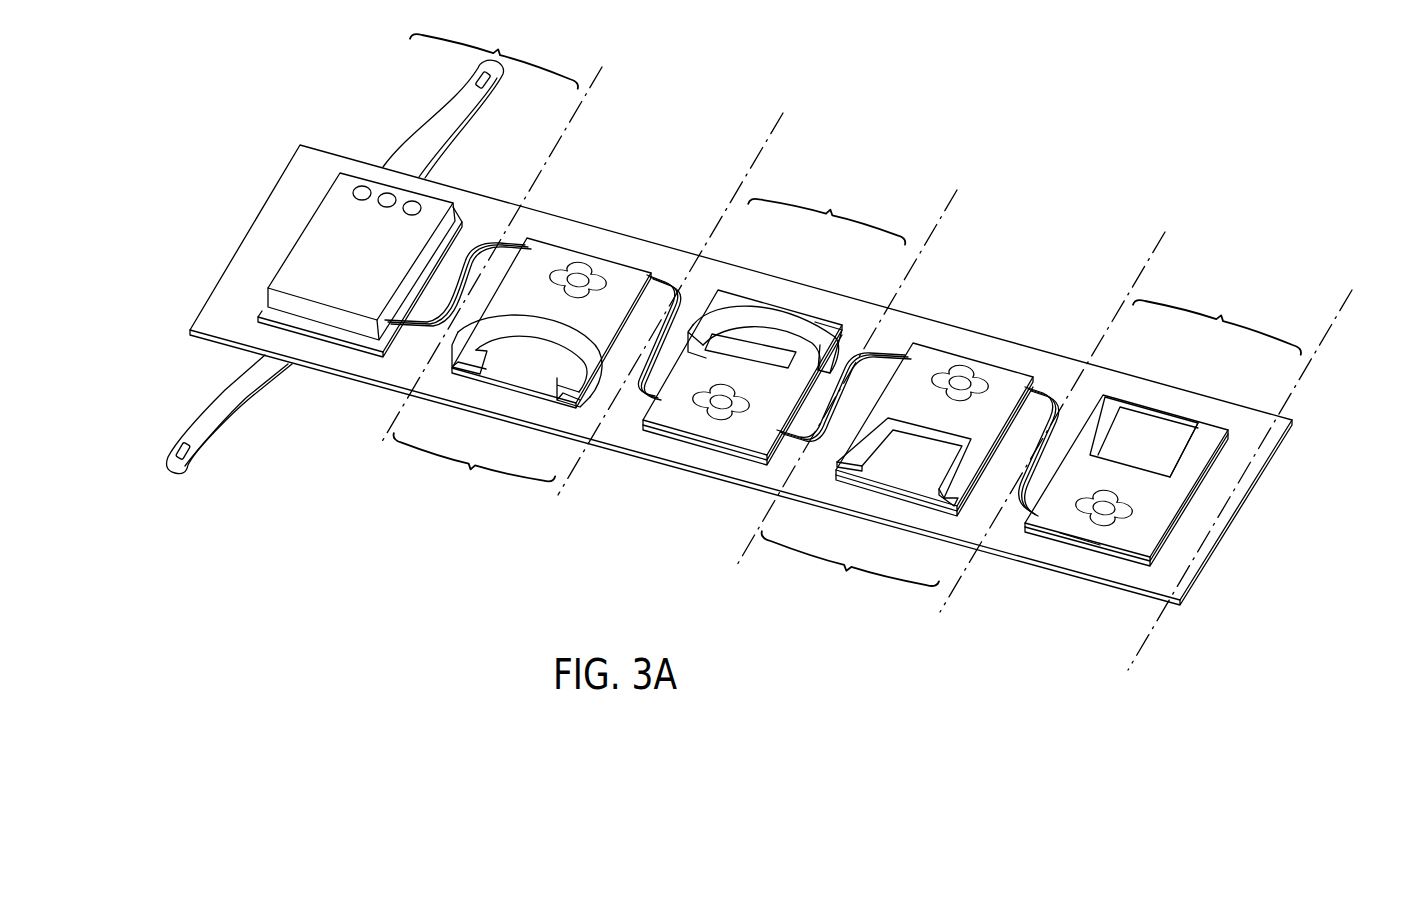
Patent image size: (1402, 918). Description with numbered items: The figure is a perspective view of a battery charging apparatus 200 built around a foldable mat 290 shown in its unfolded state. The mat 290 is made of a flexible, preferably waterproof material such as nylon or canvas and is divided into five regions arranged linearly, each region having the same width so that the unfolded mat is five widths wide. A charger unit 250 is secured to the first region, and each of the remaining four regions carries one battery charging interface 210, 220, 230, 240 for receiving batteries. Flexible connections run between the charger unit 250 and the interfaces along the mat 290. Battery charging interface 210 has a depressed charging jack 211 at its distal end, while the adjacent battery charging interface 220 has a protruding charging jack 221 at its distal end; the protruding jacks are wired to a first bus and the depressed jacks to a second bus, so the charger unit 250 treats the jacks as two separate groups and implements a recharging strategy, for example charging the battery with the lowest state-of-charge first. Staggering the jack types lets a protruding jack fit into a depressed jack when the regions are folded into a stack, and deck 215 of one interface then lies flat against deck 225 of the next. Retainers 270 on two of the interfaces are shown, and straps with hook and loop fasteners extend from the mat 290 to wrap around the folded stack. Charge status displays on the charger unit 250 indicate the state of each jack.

The battery charging apparatus 200 is at (736, 345).
The battery charging interface 210 is at (1210, 508).
The depressed charging jack 211 is at (1153, 442).
The deck 215 is at (1142, 527).
The battery charging interface 220 is at (944, 475).
The protruding charging jack 221 is at (966, 367).
The deck 225 is at (947, 502).
The battery charging interface 230 is at (790, 402).
The battery charging interface 240 is at (612, 326).
The charger unit 250 is at (281, 265).
The strap retainer 270 is at (598, 360).
The foldable mat 290 is at (714, 345).